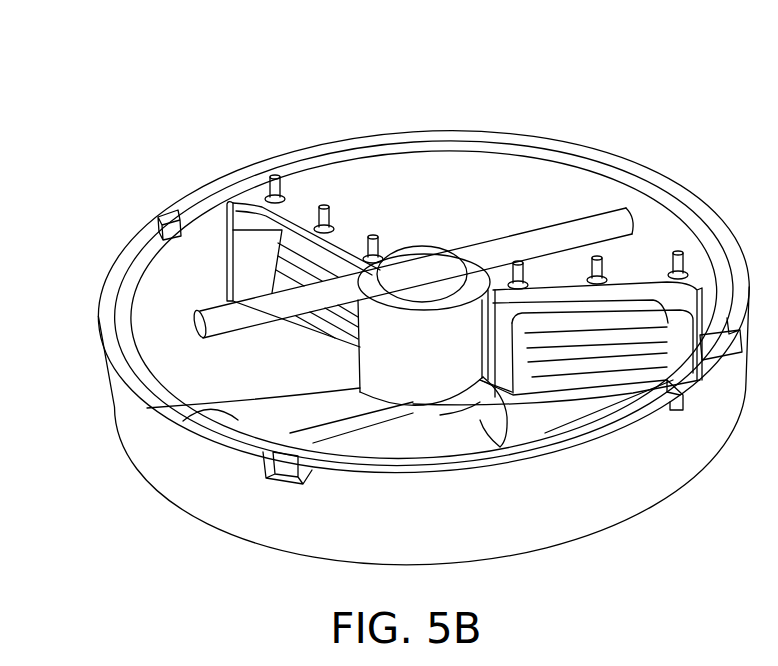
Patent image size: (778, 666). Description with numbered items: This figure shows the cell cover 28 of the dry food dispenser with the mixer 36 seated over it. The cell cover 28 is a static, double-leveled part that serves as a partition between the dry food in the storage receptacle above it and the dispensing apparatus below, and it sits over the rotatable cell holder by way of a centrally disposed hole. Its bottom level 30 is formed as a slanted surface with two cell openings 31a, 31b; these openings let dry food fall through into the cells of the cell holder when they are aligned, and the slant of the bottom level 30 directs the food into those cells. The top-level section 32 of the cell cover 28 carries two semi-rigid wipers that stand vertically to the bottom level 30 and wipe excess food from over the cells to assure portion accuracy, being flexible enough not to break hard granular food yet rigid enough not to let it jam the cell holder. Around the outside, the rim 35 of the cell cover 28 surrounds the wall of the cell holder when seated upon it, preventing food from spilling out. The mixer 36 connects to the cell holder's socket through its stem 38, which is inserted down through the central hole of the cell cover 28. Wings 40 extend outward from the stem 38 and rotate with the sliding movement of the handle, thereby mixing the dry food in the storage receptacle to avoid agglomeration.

The cell cover 28 is at (185, 108).
The bottom level 30 is at (230, 414).
The cell opening 31a is at (190, 352).
The cell opening 31b is at (582, 386).
The top-level section 32 is at (520, 182).
The rim 35 is at (250, 527).
The mixer 36 is at (429, 185).
The stem 38 is at (372, 352).
The wings 40 is at (615, 207).